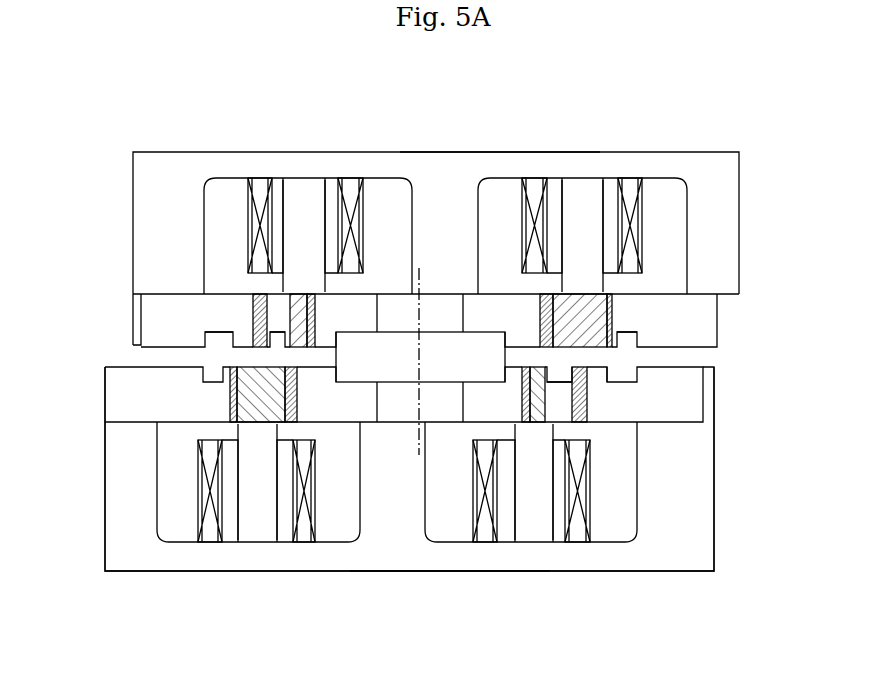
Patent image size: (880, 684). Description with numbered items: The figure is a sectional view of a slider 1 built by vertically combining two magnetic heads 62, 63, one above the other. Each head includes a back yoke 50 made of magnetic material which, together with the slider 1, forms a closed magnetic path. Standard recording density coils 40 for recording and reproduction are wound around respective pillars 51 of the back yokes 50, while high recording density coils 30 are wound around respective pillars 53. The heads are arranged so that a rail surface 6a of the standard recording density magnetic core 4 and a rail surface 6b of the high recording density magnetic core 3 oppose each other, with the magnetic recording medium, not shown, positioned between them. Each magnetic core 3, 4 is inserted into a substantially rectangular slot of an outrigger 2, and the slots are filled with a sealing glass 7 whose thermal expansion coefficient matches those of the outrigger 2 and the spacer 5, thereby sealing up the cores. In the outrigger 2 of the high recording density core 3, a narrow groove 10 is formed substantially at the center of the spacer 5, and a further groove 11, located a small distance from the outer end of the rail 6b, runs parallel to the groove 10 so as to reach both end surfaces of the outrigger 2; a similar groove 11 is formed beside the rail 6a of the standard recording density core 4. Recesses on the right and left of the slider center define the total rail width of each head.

The slider 1 is at (108, 432).
The outrigger 2 is at (166, 308).
The magnetic core 3 is at (304, 295).
The magnetic core 4 is at (590, 300).
The spacer 5 is at (262, 300).
The rail surface 6a is at (545, 298).
The rail surface 6b is at (318, 340).
The sealing glass 7 is at (290, 423).
The groove 10 is at (283, 337).
The groove 11 is at (218, 337).
The high recording density coil 30 is at (258, 205).
The standard recording density coil 40 is at (535, 190).
The back yoke 50 is at (685, 152).
The pillar 51 is at (577, 212).
The pillar 53 is at (298, 205).
The magnetic head 62 is at (504, 150).
The magnetic head 63 is at (447, 575).